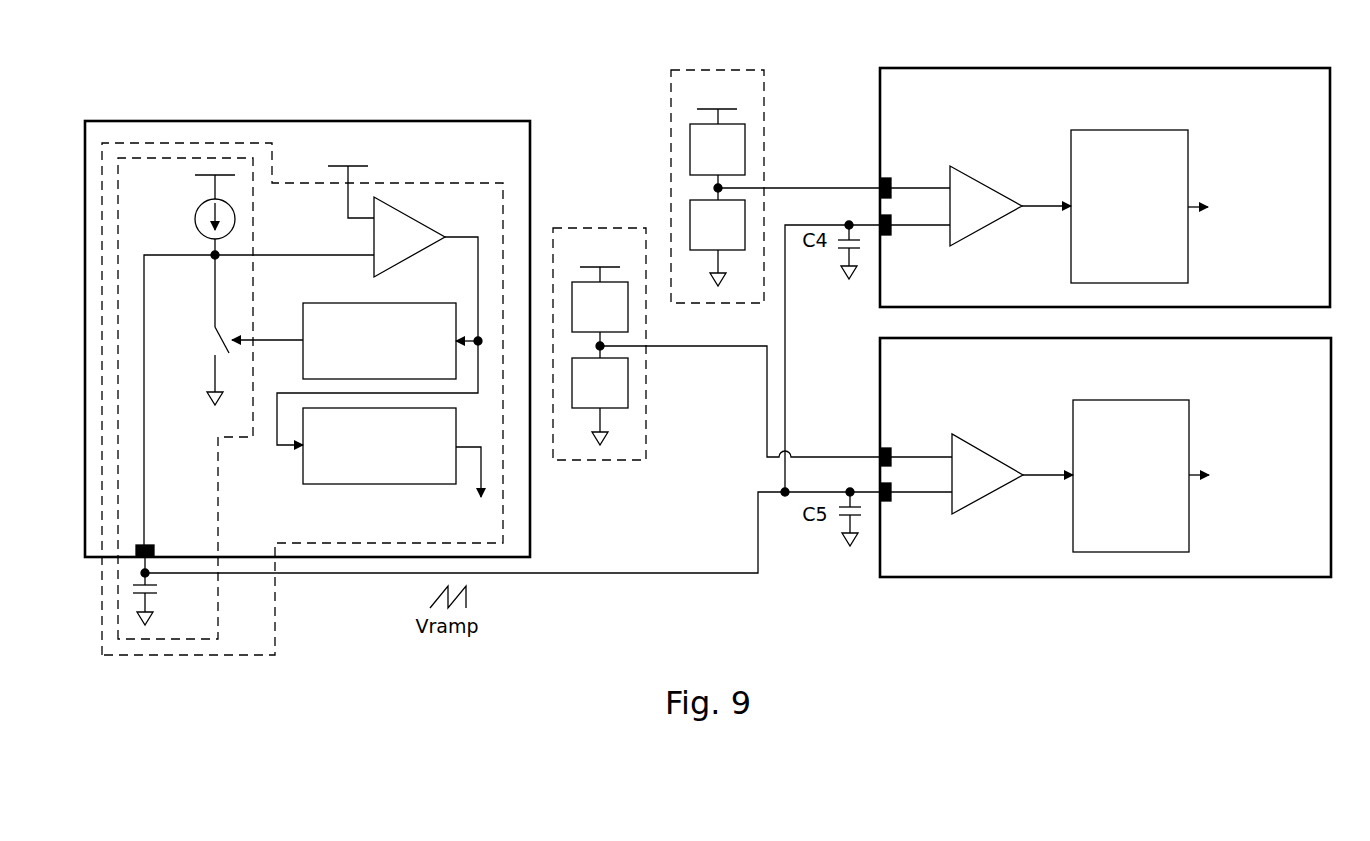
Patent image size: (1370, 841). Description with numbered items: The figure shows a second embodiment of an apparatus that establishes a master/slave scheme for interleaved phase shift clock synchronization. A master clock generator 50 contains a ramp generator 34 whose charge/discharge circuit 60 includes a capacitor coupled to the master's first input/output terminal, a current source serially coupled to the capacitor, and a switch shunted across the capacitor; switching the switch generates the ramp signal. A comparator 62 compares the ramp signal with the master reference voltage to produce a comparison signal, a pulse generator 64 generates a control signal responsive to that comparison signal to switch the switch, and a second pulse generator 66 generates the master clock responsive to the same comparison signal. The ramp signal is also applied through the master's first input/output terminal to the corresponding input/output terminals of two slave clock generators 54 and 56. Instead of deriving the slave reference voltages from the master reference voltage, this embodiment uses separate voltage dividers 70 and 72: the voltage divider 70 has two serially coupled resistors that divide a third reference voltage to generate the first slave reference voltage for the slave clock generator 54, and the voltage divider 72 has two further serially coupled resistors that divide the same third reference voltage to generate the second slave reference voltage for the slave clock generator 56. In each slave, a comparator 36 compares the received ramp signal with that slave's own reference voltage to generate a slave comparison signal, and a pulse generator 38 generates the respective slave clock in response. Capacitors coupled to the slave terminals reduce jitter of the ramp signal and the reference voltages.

The master clock generator 50 is at (304, 121).
The ramp generator 34 is at (278, 598).
The charge/discharge circuit 60 is at (218, 463).
The comparator 62 is at (418, 222).
The pulse generator 64 is at (376, 303).
The pulse generator 66 is at (354, 484).
The voltage divider 70 is at (717, 70).
The voltage divider 72 is at (597, 228).
The slave clock generator 54 is at (880, 125).
The slave clock generator 56 is at (880, 392).
The comparator 36 is at (985, 180).
The pulse generator 38 is at (1120, 130).